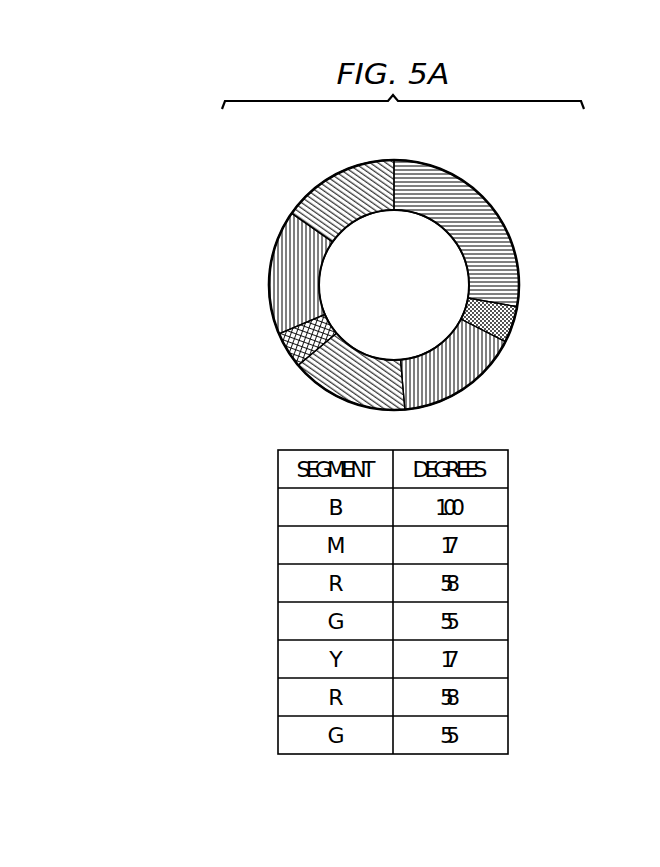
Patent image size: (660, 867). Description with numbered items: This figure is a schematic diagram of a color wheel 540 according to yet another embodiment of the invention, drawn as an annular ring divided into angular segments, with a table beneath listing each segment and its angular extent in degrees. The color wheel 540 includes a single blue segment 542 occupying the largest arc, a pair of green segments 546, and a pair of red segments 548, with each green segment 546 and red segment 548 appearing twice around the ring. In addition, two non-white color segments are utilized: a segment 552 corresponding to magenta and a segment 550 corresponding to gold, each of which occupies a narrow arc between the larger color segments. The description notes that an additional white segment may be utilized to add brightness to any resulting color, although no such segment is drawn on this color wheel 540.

The color wheel 540 is at (512, 377).
The blue segment 542 is at (455, 187).
The green segments 546 is at (342, 180).
The red segments 548 is at (278, 302).
The non-white color segment corresponding to gold 550 is at (287, 350).
The non-white color segment corresponding to magenta 552 is at (515, 325).